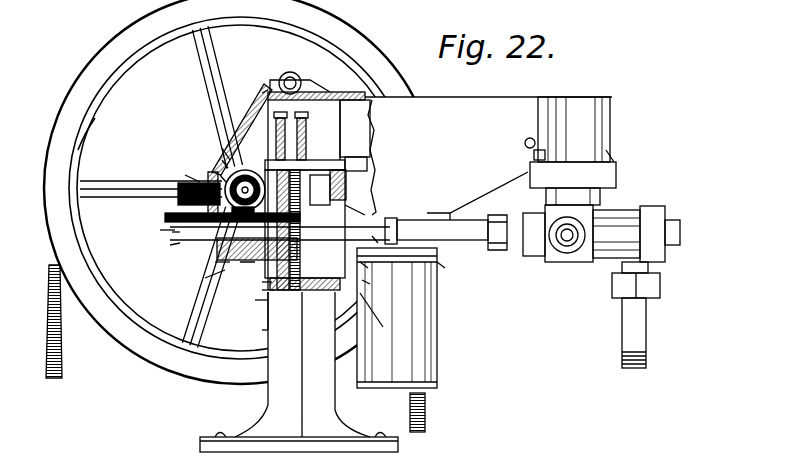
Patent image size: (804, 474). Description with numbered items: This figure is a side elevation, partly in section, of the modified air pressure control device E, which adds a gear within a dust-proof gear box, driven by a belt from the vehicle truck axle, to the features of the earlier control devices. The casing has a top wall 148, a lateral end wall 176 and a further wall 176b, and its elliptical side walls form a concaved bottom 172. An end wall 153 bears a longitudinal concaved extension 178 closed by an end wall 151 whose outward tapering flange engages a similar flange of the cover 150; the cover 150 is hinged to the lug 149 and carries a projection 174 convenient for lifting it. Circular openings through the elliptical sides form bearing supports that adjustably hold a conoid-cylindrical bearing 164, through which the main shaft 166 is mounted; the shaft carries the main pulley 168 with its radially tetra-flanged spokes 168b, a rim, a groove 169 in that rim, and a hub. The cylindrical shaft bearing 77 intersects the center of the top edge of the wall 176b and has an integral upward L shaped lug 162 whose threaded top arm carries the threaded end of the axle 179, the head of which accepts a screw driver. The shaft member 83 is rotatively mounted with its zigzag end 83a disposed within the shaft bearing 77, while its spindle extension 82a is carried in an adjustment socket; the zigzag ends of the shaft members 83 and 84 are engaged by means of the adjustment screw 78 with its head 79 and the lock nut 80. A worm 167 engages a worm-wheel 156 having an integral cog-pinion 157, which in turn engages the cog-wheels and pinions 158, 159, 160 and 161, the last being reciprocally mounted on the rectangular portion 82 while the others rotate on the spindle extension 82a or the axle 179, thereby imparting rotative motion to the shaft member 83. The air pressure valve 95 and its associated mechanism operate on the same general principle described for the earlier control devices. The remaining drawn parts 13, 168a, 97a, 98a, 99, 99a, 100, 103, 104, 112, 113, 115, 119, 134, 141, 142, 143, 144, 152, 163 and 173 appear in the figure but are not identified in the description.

The base 13 is at (243, 399).
The cylindrical shaft bearing 77 is at (378, 243).
The adjustment screw 78 is at (161, 244).
The head 79 is at (165, 230).
The lock nut 80 is at (152, 230).
The rectangular portion 82 is at (346, 174).
The spindle extension 82a is at (390, 277).
The shaft member 83 is at (346, 190).
The zigzag end 83a is at (370, 284).
The shaft member 84 is at (352, 210).
The air pressure valve 95 is at (585, 262).
The valve nipple 97a is at (655, 268).
The pipe 98a is at (648, 318).
The valve seat 99 is at (556, 262).
The coupling nut 99a is at (660, 288).
The valve cap 100 is at (682, 236).
The stuffing box 103 is at (492, 243).
The gland nut 104 is at (500, 252).
The valve rod 112 is at (476, 242).
The cylinder flange 113 is at (440, 262).
The bracket 115 is at (478, 204).
The cylinder 119 is at (438, 318).
The pin 134 is at (527, 139).
The standard 141 is at (610, 125).
The shoulder 142 is at (614, 160).
The neck 143 is at (602, 196).
The collar 144 is at (616, 178).
The top wall 148 is at (333, 93).
The lug 149 is at (291, 76).
The cover 150 is at (263, 96).
The end wall 151 is at (215, 250).
The crank shaft 152 is at (215, 241).
The end wall 153 is at (272, 283).
The worm-wheel 156 is at (205, 278).
The cog-pinion 157 is at (275, 292).
The cog-wheel 158 is at (226, 152).
The cog-wheel 159 is at (268, 300).
The cog-wheel 160 is at (299, 98).
The cog-wheel 161 is at (290, 288).
The L shaped lug 162 is at (362, 154).
The hub 163 is at (262, 172).
The conoid-cylindrical bearing 164 is at (222, 148).
The main shaft 166 is at (222, 160).
The worm 167 is at (220, 175).
The main pulley 168 is at (165, 372).
The fly wheel spoke 168a is at (208, 92).
The radially tetra-flanged spokes 168b is at (95, 118).
The groove 169 is at (60, 362).
The concaved bottom 172 is at (268, 330).
The shaft 173 is at (185, 215).
The projection 174 is at (185, 175).
The lateral end wall 176 is at (336, 132).
The wall 176b is at (388, 310).
The longitudinal concaved extension 178 is at (215, 262).
The axle 179 is at (306, 136).
The air pressure control device E is at (320, 195).